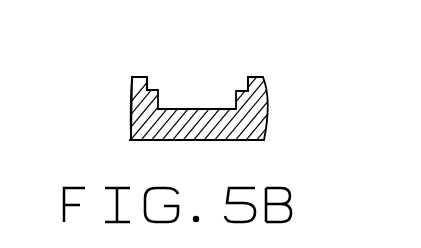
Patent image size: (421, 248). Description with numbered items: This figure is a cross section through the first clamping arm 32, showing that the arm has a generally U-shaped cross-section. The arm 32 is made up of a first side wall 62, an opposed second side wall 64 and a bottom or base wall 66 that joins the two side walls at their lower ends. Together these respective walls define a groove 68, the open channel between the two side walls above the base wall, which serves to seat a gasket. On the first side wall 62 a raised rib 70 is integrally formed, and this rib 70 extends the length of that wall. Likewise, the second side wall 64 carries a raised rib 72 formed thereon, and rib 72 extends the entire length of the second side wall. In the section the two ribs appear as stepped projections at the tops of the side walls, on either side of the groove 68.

The first clamping arm 32 is at (131, 141).
The first side wall 62 is at (252, 103).
The second side wall 64 is at (138, 102).
The bottom or base wall 66 is at (216, 133).
The groove 68 is at (200, 96).
The raised rib 70 is at (253, 77).
The raised rib 72 is at (139, 77).